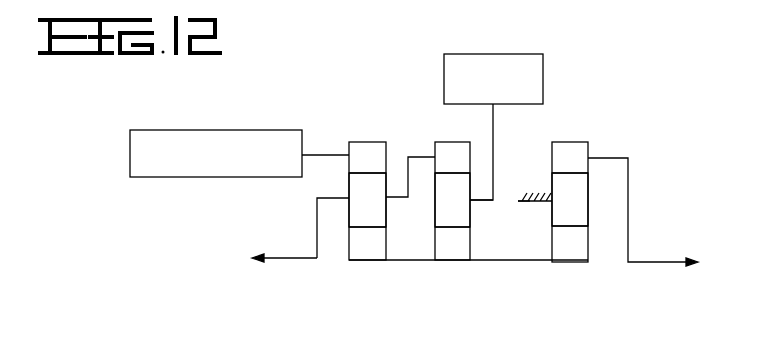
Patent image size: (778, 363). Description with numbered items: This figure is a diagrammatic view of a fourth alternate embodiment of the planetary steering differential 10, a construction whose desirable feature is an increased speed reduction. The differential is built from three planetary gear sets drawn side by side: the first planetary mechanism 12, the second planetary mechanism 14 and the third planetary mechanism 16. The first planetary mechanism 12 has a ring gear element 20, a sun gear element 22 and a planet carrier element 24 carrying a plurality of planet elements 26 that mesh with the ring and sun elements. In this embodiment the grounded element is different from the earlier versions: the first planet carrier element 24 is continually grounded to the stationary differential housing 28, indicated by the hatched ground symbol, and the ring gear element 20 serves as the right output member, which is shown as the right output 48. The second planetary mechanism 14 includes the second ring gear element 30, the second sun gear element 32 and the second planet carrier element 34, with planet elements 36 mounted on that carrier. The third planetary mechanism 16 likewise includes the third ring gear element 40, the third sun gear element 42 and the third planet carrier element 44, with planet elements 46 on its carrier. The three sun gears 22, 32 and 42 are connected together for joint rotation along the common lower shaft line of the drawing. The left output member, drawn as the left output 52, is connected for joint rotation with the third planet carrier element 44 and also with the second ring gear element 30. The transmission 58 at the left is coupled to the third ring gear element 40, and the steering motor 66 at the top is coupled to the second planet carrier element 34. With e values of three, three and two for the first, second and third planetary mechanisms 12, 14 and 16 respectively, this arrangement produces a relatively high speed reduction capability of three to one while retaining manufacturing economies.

The planetary steering differential 10 is at (315, 110).
The first planetary mechanism 12 is at (554, 274).
The second planetary mechanism 14 is at (440, 271).
The third planetary mechanism 16 is at (353, 271).
The ring gear element 20 is at (619, 106).
The sun gear element 22 is at (617, 281).
The planet carrier element 24 is at (544, 220).
The planet elements 26 is at (580, 192).
The differential housing 28 is at (550, 158).
The second ring gear element 30 is at (450, 147).
The second sun gear element 32 is at (519, 276).
The second planet carrier element 34 is at (481, 200).
The planet elements 36 is at (443, 198).
The third ring gear element 40 is at (394, 100).
The third sun gear element 42 is at (419, 276).
The third planet carrier element 44 is at (335, 200).
The planet elements 46 is at (358, 182).
The output drive 48 is at (714, 230).
The output drive 52 is at (288, 260).
The transmission 58 is at (177, 177).
The steering motor 66 is at (514, 23).